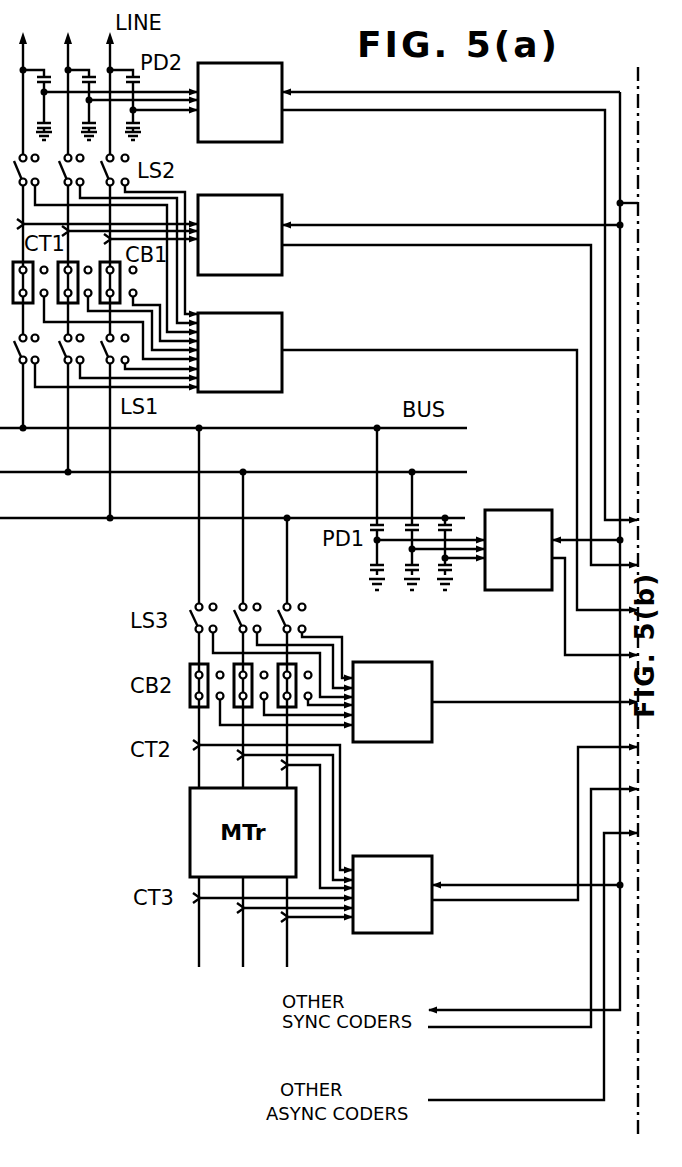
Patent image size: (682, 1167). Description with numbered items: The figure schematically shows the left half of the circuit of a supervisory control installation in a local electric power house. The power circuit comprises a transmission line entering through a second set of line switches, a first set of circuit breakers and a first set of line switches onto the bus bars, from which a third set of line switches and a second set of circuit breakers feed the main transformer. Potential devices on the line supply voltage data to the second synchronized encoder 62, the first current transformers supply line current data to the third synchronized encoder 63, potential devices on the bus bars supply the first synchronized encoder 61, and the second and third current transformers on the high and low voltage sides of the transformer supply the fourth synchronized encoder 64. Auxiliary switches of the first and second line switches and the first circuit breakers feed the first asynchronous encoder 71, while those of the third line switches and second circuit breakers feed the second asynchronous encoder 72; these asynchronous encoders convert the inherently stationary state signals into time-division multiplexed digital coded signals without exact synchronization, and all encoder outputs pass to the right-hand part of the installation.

The first synchronized encoder 61 is at (520, 510).
The second synchronized encoder 62 is at (283, 133).
The third synchronized encoder 63 is at (283, 266).
The fourth synchronized encoder 64 is at (434, 866).
The first asynchronous encoder 71 is at (283, 384).
The second asynchronous encoder 72 is at (434, 735).